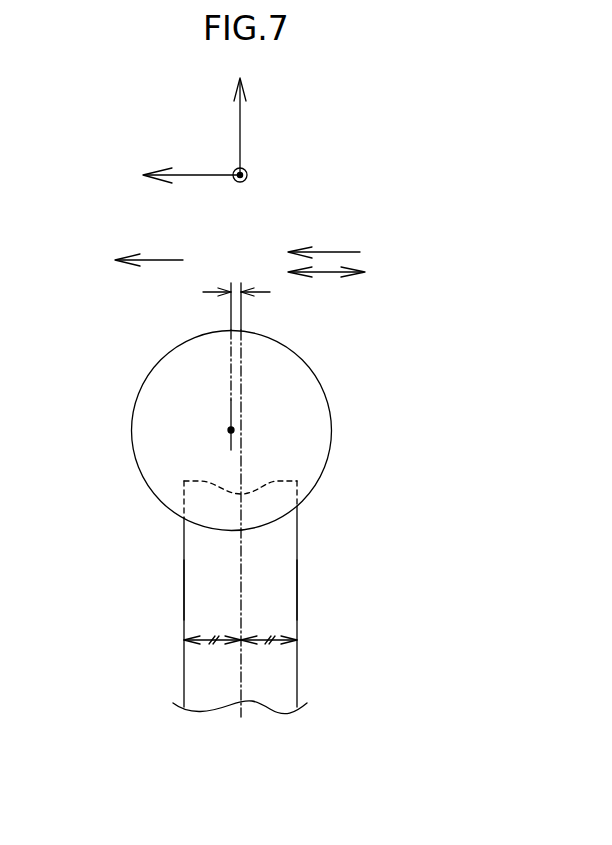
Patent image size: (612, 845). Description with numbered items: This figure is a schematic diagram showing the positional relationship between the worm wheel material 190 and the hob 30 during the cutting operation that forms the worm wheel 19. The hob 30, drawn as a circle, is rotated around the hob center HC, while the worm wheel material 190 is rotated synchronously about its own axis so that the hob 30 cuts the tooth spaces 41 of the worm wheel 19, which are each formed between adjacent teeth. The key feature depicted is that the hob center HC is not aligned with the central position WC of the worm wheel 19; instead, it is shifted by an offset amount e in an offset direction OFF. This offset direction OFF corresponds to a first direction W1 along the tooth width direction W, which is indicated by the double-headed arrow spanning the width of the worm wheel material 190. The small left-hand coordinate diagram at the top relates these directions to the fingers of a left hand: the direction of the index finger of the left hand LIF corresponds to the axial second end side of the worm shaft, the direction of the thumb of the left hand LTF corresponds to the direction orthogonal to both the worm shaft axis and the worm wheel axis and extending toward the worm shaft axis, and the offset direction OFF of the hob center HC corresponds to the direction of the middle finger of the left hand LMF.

The hob 30 is at (129, 460).
The tooth spaces 41 is at (267, 520).
The worm wheel 19 is at (182, 577).
The worm wheel material 190 is at (186, 594).
The hob center HC is at (231, 430).
The central position WC is at (242, 416).
The offset amount e is at (236, 283).
The direction of the thumb of the left hand LTF is at (241, 127).
The direction of the index finger of the left hand LIF is at (248, 171).
The direction of the middle finger of the left hand LMF is at (188, 175).
The offset direction OFF is at (160, 260).
The first direction W1 is at (335, 252).
The tooth width direction W is at (327, 274).